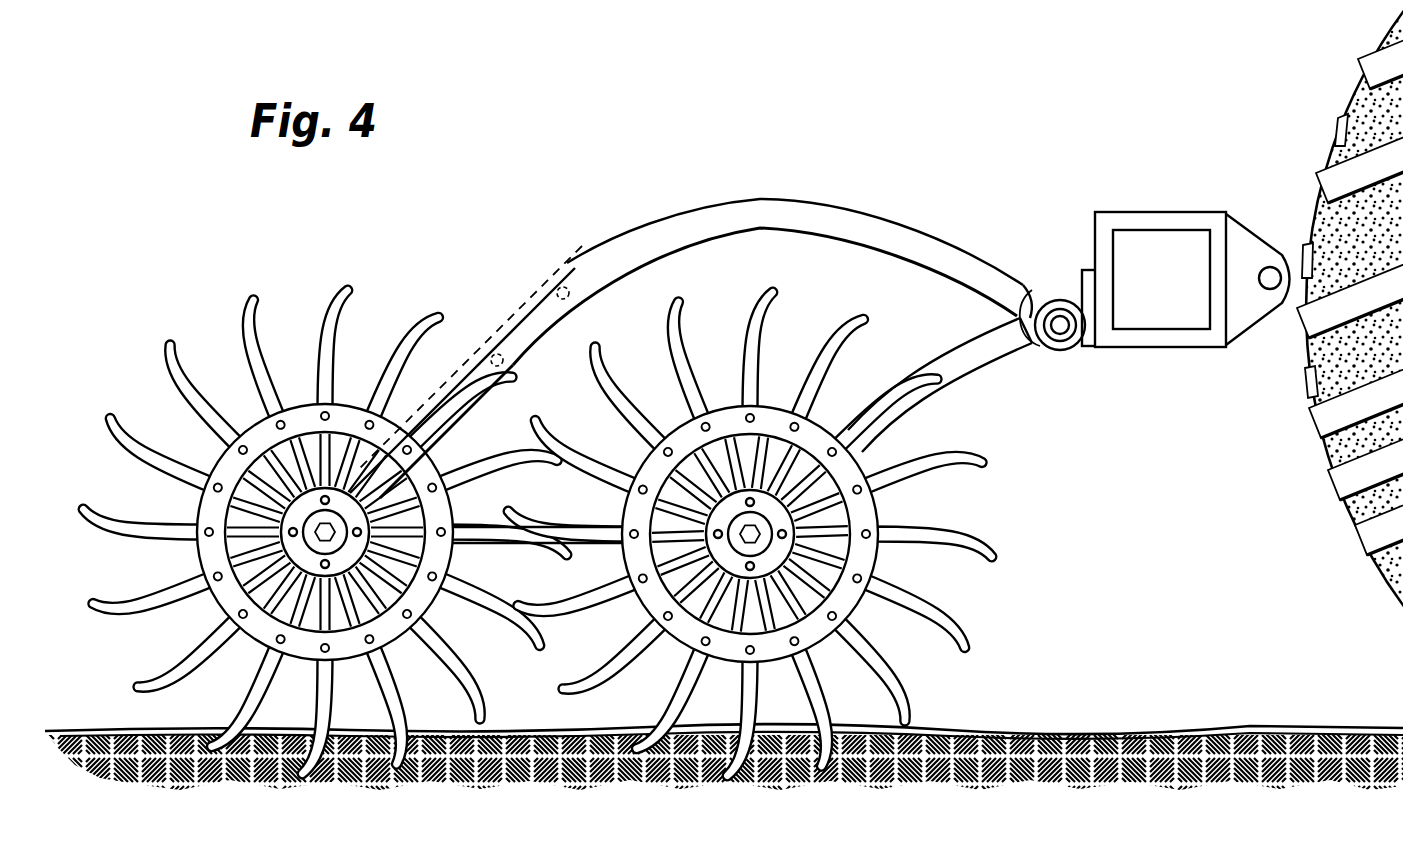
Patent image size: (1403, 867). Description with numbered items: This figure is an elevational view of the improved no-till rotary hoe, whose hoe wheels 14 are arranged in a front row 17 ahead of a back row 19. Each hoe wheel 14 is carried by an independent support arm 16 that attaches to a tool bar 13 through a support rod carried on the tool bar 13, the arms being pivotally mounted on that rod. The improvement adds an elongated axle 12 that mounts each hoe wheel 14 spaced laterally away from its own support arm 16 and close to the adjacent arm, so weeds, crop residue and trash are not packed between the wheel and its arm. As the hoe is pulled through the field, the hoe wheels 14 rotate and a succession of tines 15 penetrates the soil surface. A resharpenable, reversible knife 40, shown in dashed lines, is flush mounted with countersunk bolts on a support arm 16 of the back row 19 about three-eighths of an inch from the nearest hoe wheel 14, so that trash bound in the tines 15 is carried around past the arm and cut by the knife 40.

The elongated axle 12 is at (748, 537).
The tool bar 13 is at (1157, 217).
The hoe wheels 14 is at (200, 616).
The tines 15 is at (462, 662).
The support arm 16 is at (832, 221).
The front row 17 is at (922, 427).
The back row 19 is at (207, 338).
The knife 40 is at (498, 328).